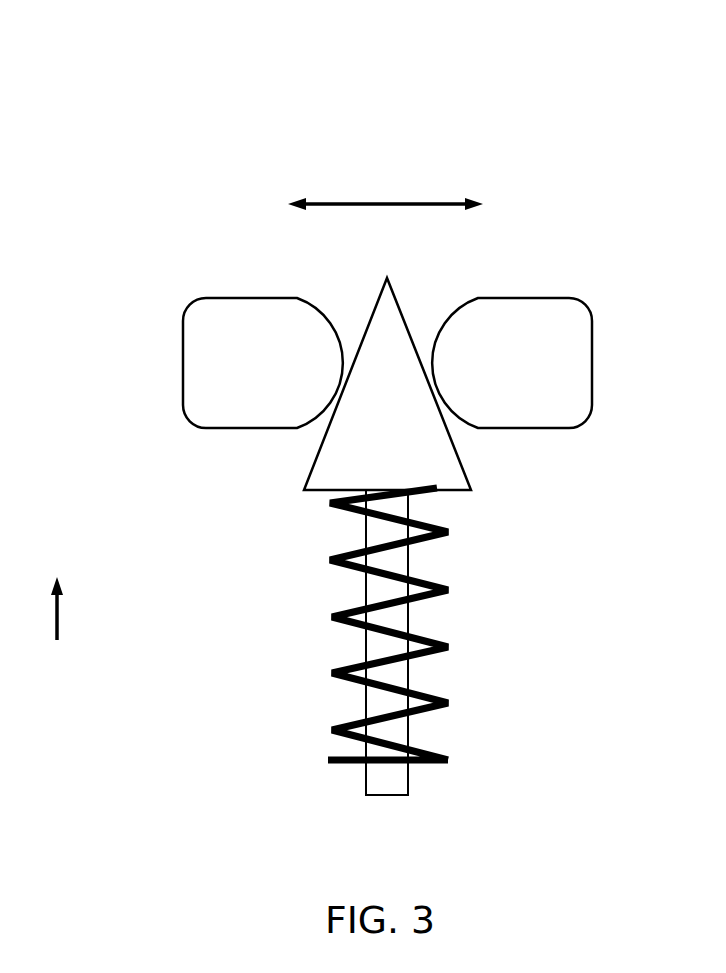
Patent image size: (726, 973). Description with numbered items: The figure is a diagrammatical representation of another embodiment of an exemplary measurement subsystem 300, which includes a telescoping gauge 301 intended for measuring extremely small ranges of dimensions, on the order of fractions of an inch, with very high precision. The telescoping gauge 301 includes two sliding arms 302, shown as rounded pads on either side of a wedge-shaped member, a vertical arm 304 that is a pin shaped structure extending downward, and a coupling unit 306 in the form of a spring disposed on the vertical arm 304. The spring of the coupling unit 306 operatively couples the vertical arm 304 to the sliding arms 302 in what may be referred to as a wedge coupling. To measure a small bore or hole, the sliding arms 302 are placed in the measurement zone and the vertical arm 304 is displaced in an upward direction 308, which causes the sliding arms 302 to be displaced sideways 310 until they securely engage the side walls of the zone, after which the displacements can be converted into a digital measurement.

The measurement subsystem 300 is at (562, 60).
The telescoping gauge 301 is at (471, 482).
The sliding arms 302 is at (478, 332).
The vertical arm 304 is at (366, 782).
The coupling unit 306 is at (447, 702).
The upward direction 308 is at (57, 618).
The sideways displacement 310 is at (387, 202).